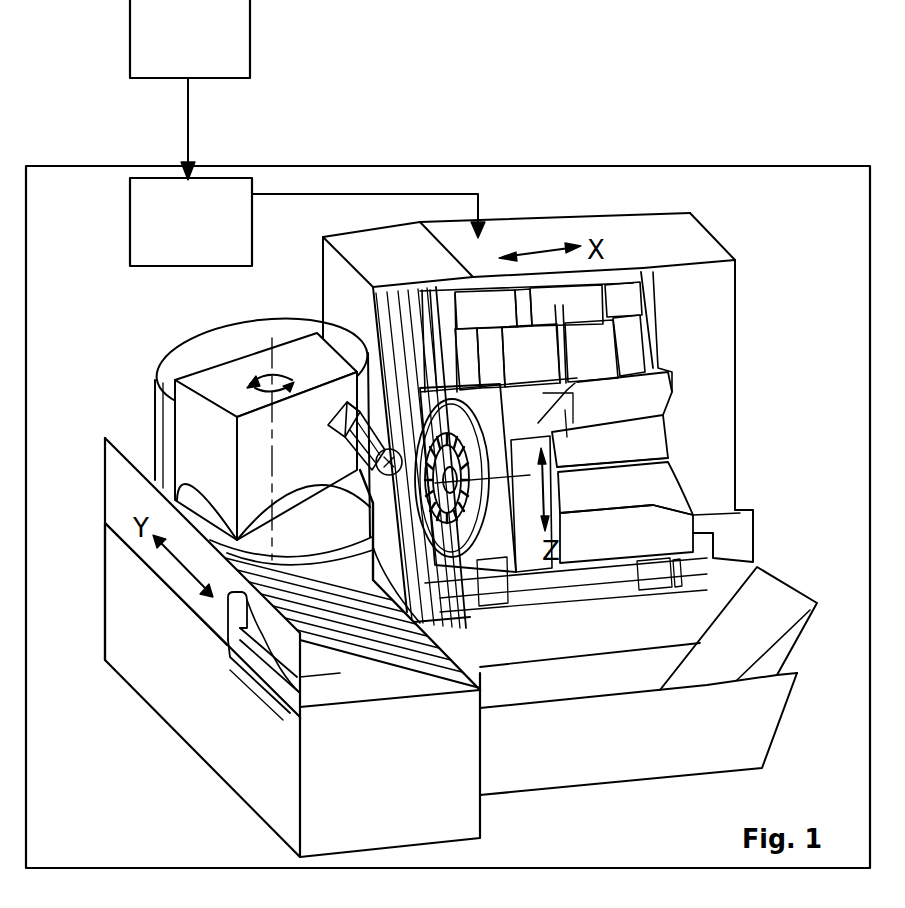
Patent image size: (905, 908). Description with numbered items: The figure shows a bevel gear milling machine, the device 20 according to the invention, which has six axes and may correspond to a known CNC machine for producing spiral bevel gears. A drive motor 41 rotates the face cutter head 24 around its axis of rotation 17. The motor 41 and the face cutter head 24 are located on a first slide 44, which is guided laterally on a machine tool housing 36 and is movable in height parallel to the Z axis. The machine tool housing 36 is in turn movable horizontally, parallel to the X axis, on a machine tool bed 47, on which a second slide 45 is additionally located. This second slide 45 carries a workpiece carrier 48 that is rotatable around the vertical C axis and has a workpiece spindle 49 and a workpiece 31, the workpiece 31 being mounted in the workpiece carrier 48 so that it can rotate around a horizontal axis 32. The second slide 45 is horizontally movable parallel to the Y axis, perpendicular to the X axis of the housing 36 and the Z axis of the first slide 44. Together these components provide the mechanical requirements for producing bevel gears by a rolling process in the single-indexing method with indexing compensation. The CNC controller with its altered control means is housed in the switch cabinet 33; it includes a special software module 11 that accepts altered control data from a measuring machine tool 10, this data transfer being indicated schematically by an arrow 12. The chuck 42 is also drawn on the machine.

The measuring machine tool 10 is at (190, 39).
The software module 11 is at (191, 222).
The arrow 12 is at (189, 126).
The device 20 is at (448, 517).
The face cutter head 24 is at (497, 593).
The machine tool housing 36 is at (523, 238).
The switch cabinet 33 is at (700, 314).
The drive motor 41 is at (653, 430).
The axis of rotation 17 is at (693, 455).
The first slide 44 is at (673, 523).
The chuck 42 is at (463, 450).
The machine tool bed 47 is at (580, 775).
The second slide 45 is at (228, 615).
The workpiece carrier 48 is at (185, 445).
The workpiece spindle 49 is at (330, 418).
The horizontal axis 32 is at (340, 432).
The workpiece 31 is at (378, 475).